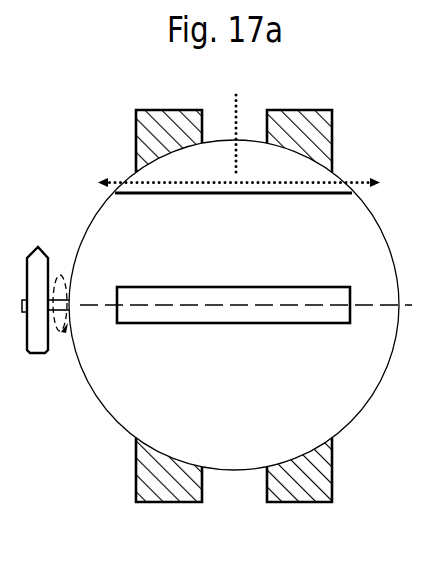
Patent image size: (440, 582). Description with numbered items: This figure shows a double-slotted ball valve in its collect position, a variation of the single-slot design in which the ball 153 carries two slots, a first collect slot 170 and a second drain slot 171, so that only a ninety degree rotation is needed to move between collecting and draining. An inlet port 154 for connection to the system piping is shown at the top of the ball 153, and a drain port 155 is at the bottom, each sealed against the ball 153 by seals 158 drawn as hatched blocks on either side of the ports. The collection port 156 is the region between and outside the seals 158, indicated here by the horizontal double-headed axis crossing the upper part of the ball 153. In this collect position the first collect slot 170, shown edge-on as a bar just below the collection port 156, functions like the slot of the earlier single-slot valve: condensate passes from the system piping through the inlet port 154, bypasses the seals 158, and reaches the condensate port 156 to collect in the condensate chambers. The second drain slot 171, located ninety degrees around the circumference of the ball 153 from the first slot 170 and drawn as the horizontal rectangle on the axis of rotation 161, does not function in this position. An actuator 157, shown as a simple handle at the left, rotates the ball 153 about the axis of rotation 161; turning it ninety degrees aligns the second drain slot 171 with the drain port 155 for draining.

The ball 153 is at (352, 408).
The inlet port 154 is at (253, 118).
The drain port 155 is at (228, 490).
The collection port 156 is at (241, 182).
The actuator 157 is at (41, 250).
The seals 158 is at (136, 110).
The axis of rotation 161 is at (105, 305).
The first collect slot 170 is at (162, 168).
The second drain slot 171 is at (163, 313).